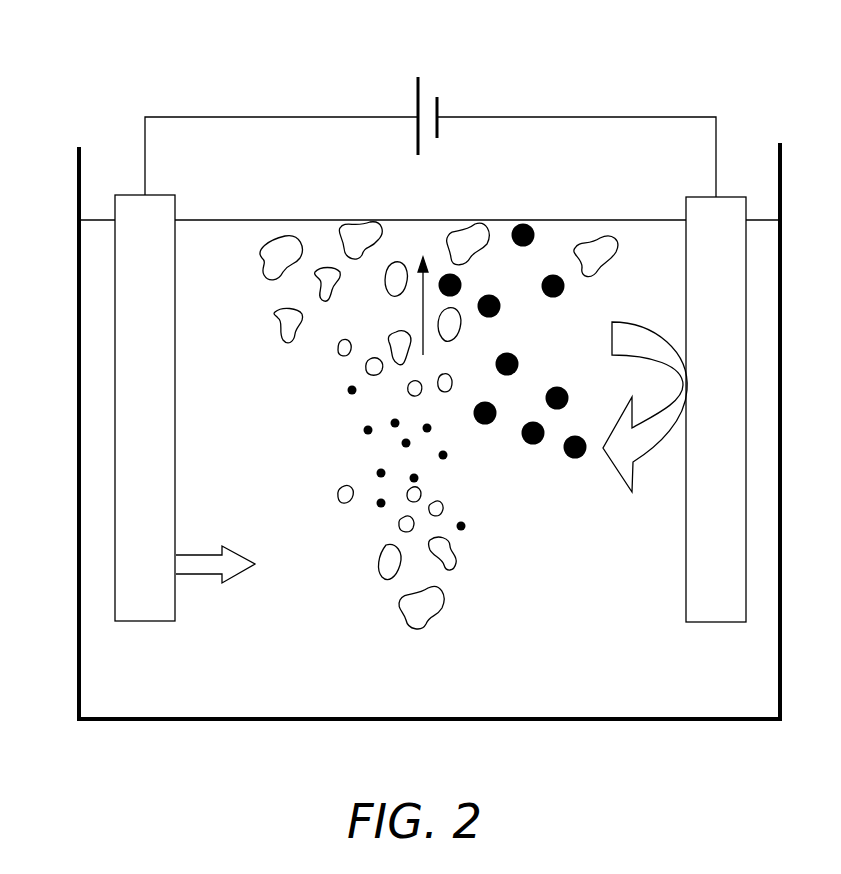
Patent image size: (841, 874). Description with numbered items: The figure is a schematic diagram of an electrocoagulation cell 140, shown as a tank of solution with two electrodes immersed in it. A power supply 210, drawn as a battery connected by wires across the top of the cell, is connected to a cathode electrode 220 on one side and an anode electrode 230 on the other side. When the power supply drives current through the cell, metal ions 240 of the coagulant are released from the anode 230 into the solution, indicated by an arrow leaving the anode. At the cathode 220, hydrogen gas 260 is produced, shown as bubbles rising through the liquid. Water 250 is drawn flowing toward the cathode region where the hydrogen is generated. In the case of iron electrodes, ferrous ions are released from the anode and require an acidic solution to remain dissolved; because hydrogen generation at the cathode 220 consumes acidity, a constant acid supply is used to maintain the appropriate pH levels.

The electrocoagulation cell 140 is at (195, 84).
The power supply 210 is at (438, 99).
The cathode electrode 220 is at (685, 600).
The anode electrode 230 is at (176, 600).
The metal ions 240 is at (288, 553).
The water flow 250 is at (566, 318).
The hydrogen gas 260 is at (558, 537).